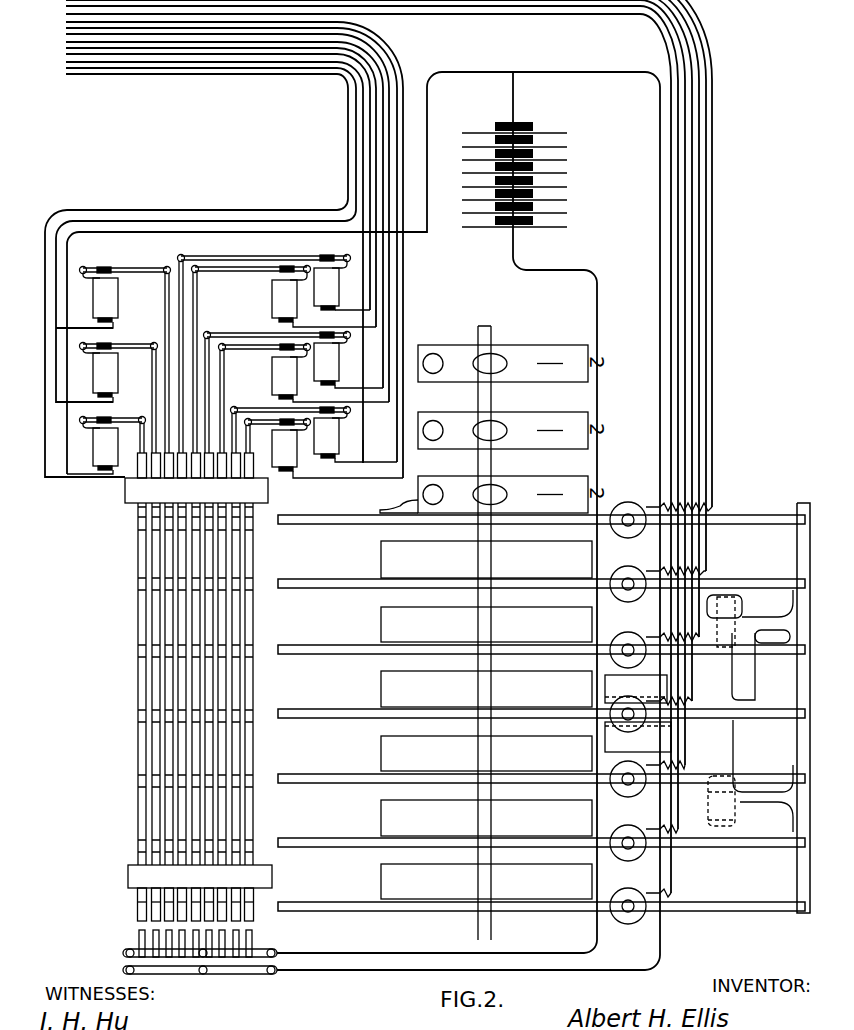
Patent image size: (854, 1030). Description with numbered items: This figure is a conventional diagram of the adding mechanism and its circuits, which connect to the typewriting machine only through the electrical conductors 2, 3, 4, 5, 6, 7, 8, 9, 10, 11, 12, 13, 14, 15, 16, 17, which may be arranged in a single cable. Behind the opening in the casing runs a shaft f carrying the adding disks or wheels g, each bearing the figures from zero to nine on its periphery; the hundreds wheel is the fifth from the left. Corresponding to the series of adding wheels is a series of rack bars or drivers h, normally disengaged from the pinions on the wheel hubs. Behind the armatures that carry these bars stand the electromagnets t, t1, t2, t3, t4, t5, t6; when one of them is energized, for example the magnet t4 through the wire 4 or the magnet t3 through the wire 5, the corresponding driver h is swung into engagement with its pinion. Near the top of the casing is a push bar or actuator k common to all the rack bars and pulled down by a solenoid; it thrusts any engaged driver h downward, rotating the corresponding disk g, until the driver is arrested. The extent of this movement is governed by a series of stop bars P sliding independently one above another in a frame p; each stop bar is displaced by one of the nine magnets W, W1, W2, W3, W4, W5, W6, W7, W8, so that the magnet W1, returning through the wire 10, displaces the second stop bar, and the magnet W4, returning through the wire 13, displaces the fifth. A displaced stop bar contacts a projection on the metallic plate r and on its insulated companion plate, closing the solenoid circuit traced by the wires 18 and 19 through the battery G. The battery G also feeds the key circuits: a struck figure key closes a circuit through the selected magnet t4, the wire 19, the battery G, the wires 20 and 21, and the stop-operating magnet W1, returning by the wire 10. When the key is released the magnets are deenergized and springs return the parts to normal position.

The electrical conductor 2 is at (716, 215).
The electrical conductor 3 is at (706, 243).
The wire 4 is at (699, 268).
The wire 5 is at (692, 292).
The electrical conductor 6 is at (685, 318).
The electrical conductor 7 is at (678, 343).
The electrical conductor 8 is at (671, 368).
The electrical conductor 9 is at (248, 22).
The wire 10 is at (260, 28).
The electrical conductor 11 is at (277, 35).
The electrical conductor 12 is at (292, 42).
The wire 13 is at (310, 48).
The electrical conductor 14 is at (370, 110).
The electrical conductor 15 is at (363, 130).
The electrical conductor 16 is at (356, 150).
The electrical conductor 17 is at (349, 169).
The wire 18 is at (392, 970).
The wire 19 is at (418, 945).
The wire 20 is at (363, 521).
The wire 21 is at (374, 441).
The battery G is at (437, 512).
The shaft f is at (492, 336).
The adding disk g is at (381, 742).
The rack bar h is at (303, 590).
The push bar k is at (808, 582).
The electromagnet t is at (621, 890).
The electromagnet t1 is at (621, 827).
The electromagnet t2 is at (621, 763).
The electromagnet t3 is at (621, 698).
The electromagnet t4 is at (621, 634).
The electromagnet t5 is at (621, 568).
The electromagnet t6 is at (621, 504).
The stop-operating magnet W is at (324, 449).
The stop-operating magnet W1 is at (314, 435).
The stop-operating magnet W2 is at (304, 399).
The stop-operating magnet W3 is at (294, 393).
The stop-operating magnet W4 is at (284, 360).
The stop-operating magnet W5 is at (274, 354).
The stop-operating magnet W6 is at (113, 360).
The stop-operating magnet W7 is at (107, 398).
The stop-operating magnet W8 is at (106, 446).
The frame p is at (136, 494).
The stop bar P is at (182, 684).
The metallic plate r is at (124, 952).